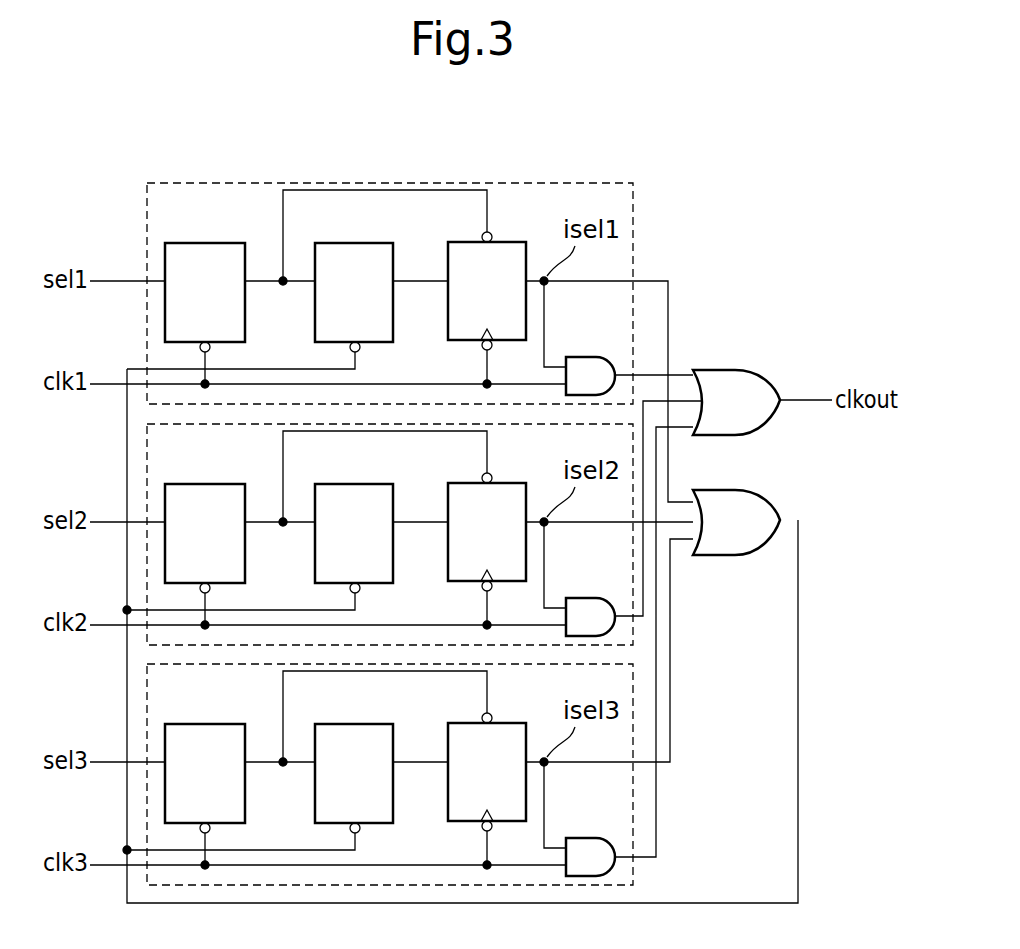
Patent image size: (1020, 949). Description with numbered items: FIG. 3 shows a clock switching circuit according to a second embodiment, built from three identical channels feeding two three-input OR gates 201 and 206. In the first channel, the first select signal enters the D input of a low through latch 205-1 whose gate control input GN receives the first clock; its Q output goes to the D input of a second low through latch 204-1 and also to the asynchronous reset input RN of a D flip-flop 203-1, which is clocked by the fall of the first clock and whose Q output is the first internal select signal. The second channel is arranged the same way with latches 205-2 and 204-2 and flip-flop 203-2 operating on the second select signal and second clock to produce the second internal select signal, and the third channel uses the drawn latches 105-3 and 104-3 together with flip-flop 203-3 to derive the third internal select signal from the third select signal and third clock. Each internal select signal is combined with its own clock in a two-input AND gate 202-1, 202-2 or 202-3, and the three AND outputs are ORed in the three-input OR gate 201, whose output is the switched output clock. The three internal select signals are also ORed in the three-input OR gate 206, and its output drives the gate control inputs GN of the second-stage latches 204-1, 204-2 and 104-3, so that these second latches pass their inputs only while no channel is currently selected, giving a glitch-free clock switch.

The low through latch 205-1 is at (198, 243).
The low through latch 204-1 is at (349, 243).
The asynchronous reset D-FF 203-1 is at (517, 242).
The two-input AND gate 202-1 is at (578, 357).
The low through latch 205-2 is at (205, 513).
The low through latch 204-2 is at (354, 513).
The asynchronous reset D-FF 203-2 is at (503, 512).
The two-input AND gate 202-2 is at (584, 587).
The first D flip-flop (channel 3) 105-3 is at (205, 753).
The second D flip-flop (channel 3) 104-3 is at (354, 753).
The asynchronous reset D-FF 203-3 is at (503, 752).
The two-input AND gate 202-3 is at (584, 827).
The three-input OR gate 201 is at (715, 370).
The three-input OR gate 206 is at (720, 556).